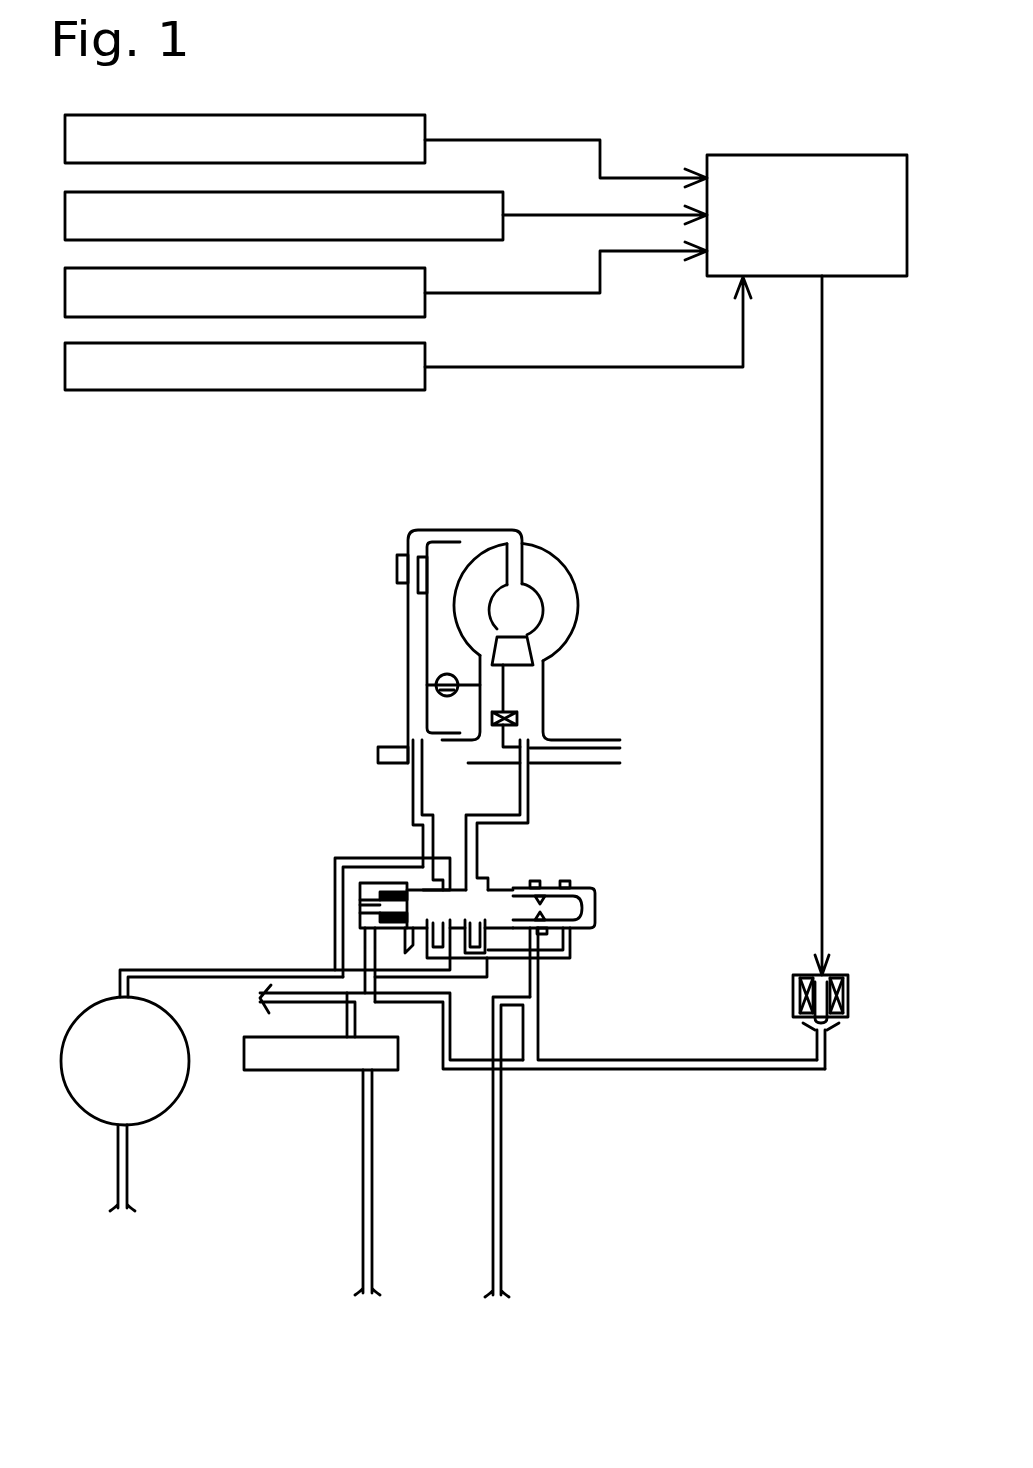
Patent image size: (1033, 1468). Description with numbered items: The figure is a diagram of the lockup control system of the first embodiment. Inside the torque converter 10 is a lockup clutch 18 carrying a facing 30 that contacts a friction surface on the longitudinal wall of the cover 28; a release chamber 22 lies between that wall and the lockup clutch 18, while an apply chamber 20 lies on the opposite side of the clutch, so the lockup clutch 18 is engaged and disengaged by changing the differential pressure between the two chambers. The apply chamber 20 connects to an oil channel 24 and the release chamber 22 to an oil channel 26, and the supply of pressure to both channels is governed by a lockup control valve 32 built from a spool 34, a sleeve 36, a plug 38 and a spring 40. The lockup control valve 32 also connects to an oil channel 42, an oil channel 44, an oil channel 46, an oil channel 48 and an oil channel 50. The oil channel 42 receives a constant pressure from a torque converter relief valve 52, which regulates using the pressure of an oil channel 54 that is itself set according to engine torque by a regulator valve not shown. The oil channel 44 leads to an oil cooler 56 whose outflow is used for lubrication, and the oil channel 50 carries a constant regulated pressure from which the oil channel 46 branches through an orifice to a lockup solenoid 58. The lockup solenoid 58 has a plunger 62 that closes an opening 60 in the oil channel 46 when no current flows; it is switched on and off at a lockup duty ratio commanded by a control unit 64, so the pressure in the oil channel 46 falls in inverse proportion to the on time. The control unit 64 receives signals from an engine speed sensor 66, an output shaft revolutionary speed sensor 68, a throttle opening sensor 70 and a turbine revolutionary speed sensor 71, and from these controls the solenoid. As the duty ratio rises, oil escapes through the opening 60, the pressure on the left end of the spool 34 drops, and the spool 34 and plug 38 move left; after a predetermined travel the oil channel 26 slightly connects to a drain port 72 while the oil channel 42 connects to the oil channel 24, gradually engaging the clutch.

The torque converter 10 is at (363, 531).
The lockup clutch 18 is at (427, 662).
The apply chamber 20 is at (522, 699).
The release chamber 22 is at (420, 717).
The oil channel 24 is at (530, 809).
The oil channel 26 is at (413, 828).
The cover 28 is at (408, 627).
The facing 30 is at (408, 591).
The lockup control valve 32 is at (483, 917).
The spool 34 is at (485, 908).
The sleeve 36 is at (587, 890).
The plug 38 is at (568, 908).
The spring 40 is at (360, 915).
The oil channel 42 is at (335, 875).
The oil channel 44 is at (173, 968).
The oil channel 46 is at (423, 1003).
The oil channel 48 is at (560, 960).
The oil channel 50 is at (540, 987).
The torque converter relief valve 52 is at (322, 1092).
The oil channel 54 is at (372, 1228).
The oil cooler 56 is at (90, 1000).
The lockup solenoid 58 is at (803, 975).
The opening 60 is at (791, 1019).
The plunger 62 is at (813, 1025).
The control unit 64 is at (735, 155).
The engine speed sensor 66 is at (425, 122).
The output shaft revolutionary speed sensor 68 is at (503, 195).
The throttle opening sensor 70 is at (425, 308).
The turbine revolutionary speed sensor 71 is at (425, 383).
The drain port 72 is at (405, 948).